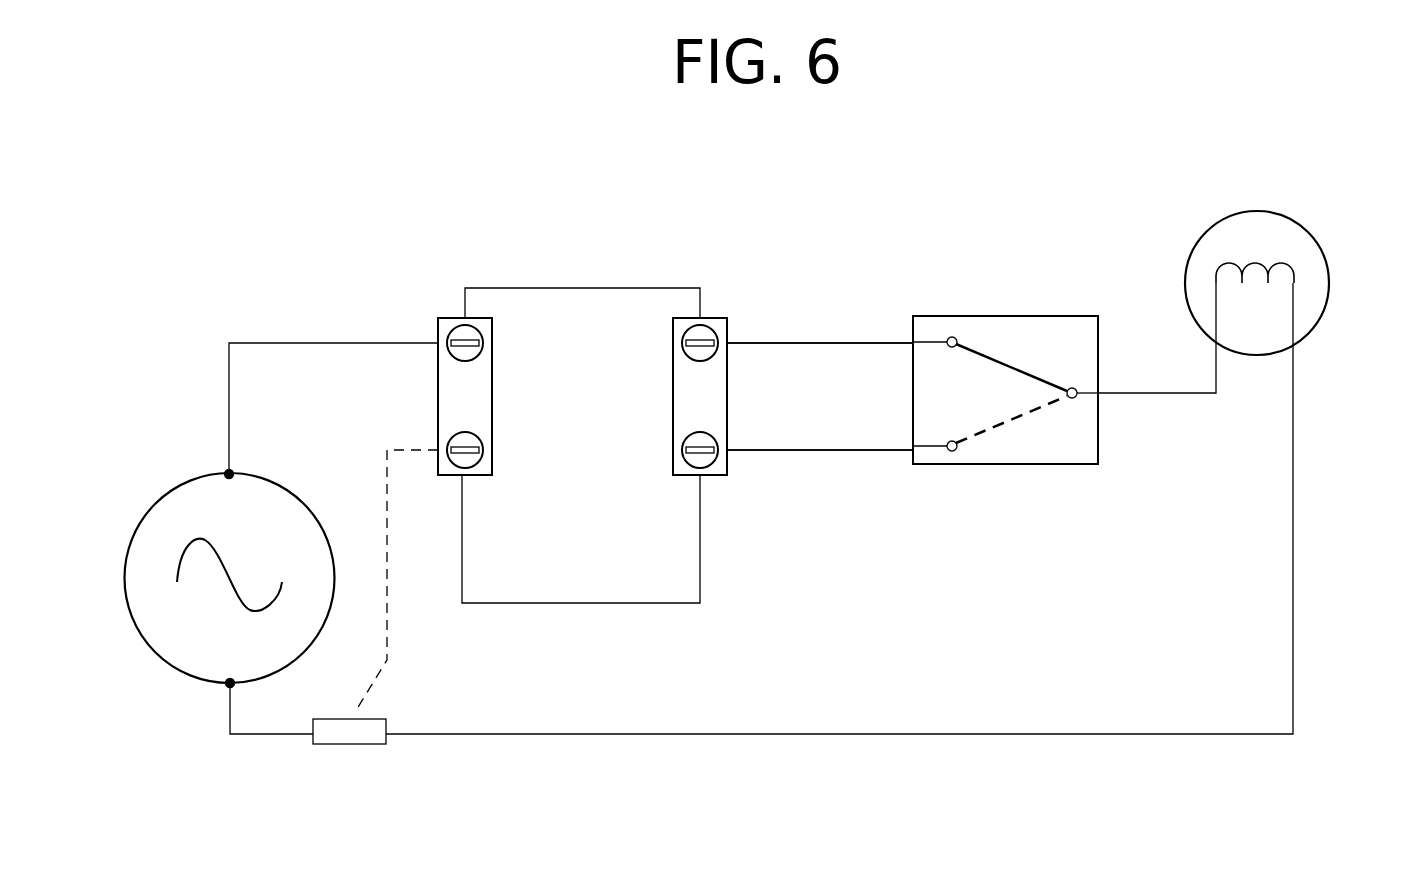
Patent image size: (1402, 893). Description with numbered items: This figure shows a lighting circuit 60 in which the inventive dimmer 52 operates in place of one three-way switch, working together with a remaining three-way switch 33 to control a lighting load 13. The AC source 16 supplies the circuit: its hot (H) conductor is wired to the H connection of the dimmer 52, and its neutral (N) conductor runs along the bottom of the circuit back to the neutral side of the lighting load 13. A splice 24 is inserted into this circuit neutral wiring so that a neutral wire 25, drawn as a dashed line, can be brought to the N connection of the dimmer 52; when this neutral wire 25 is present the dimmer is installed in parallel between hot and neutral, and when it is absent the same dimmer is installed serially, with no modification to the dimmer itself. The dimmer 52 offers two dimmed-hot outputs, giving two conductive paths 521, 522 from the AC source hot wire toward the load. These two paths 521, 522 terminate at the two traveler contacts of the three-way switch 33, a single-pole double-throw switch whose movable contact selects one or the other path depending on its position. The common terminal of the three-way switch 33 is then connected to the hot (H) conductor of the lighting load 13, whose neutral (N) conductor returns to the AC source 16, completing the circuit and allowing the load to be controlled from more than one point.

The lighting system 60 is at (306, 199).
The AC source 16 is at (275, 483).
The splice 24 is at (375, 744).
The neutral wire 25 is at (387, 650).
The inventive dimmer 52 is at (600, 603).
The conductive path 521 is at (797, 342).
The conductive path 522 is at (797, 446).
The three-way switch 33 is at (975, 316).
The lighting load 13 is at (1312, 232).